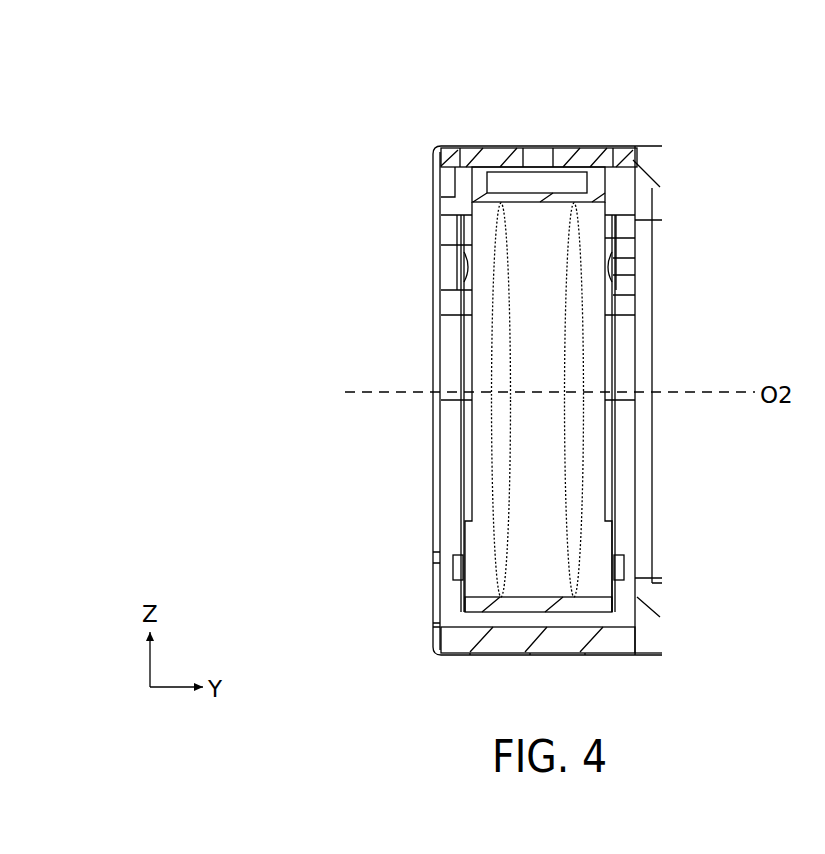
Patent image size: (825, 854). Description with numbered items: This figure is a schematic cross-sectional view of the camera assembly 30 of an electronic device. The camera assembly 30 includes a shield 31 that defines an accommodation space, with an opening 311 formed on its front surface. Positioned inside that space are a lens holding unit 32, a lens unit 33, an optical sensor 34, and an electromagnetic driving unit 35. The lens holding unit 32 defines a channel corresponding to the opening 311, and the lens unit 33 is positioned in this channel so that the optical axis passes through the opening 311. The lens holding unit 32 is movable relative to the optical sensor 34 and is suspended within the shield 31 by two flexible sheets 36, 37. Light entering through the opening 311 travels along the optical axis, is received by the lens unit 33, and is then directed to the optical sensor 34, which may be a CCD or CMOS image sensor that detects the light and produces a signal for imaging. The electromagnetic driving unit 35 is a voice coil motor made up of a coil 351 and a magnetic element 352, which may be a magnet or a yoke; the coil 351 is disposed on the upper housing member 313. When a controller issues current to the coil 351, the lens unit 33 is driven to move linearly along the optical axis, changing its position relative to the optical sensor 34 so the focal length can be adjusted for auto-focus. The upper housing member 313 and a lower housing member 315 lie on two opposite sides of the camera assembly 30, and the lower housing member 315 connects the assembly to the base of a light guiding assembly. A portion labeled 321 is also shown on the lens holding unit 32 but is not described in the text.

The camera assembly 30 is at (346, 72).
The shield 31 is at (480, 143).
The opening 311 is at (433, 295).
The upper housing member 313 is at (450, 147).
The lower housing member 315 is at (448, 657).
The lens holding unit 32 is at (478, 602).
The holder top portion 321 is at (483, 187).
The lens unit 33 is at (491, 432).
The optical sensor 34 is at (657, 340).
The electromagnetic driving unit 35 is at (615, 150).
The coil 351 is at (502, 157).
The magnetic element 352 is at (545, 182).
The flexible sheet 36 is at (463, 548).
The flexible sheet 37 is at (615, 548).